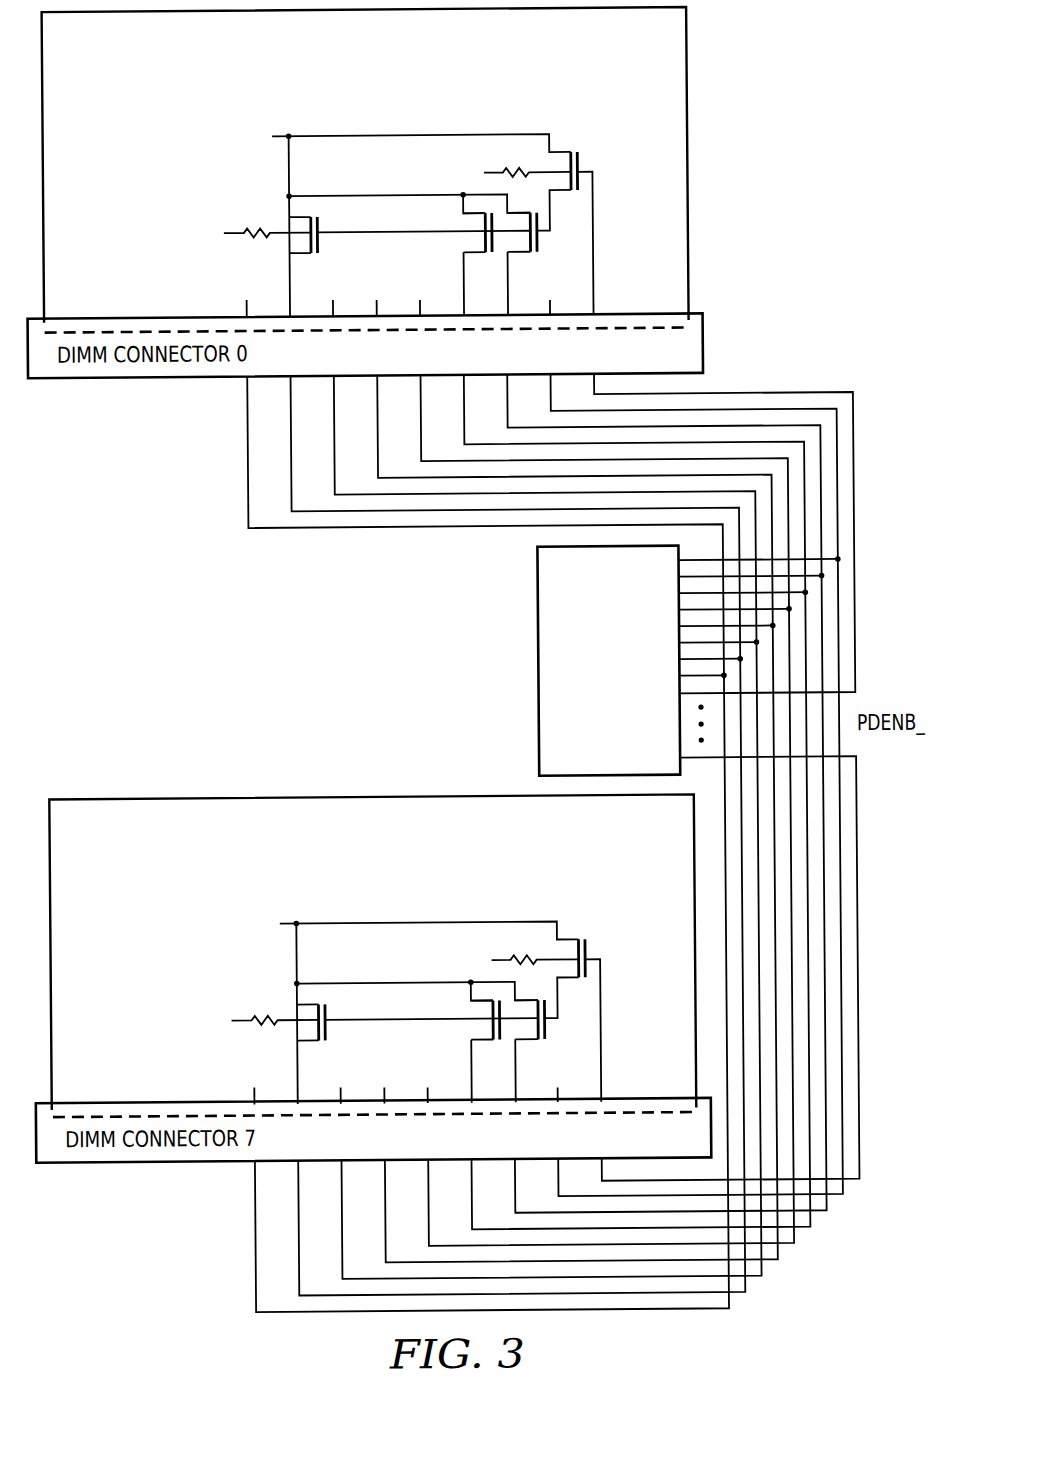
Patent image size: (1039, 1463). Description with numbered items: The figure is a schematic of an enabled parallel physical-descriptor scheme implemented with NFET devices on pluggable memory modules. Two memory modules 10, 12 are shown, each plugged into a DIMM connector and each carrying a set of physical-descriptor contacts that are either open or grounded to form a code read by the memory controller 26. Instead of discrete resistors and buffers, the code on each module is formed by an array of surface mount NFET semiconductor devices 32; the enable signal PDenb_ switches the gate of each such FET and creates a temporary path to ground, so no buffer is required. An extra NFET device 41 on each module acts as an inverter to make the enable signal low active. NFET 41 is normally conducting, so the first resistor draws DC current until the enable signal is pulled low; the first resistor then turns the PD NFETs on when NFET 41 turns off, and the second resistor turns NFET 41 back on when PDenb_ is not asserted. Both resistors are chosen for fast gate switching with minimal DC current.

The memory module 10 is at (688, 172).
The memory module 12 is at (372, 926).
The memory controller 26 is at (532, 664).
The surface mount NFET semiconductor device 32 is at (328, 248).
The NFET device 41 is at (599, 547).